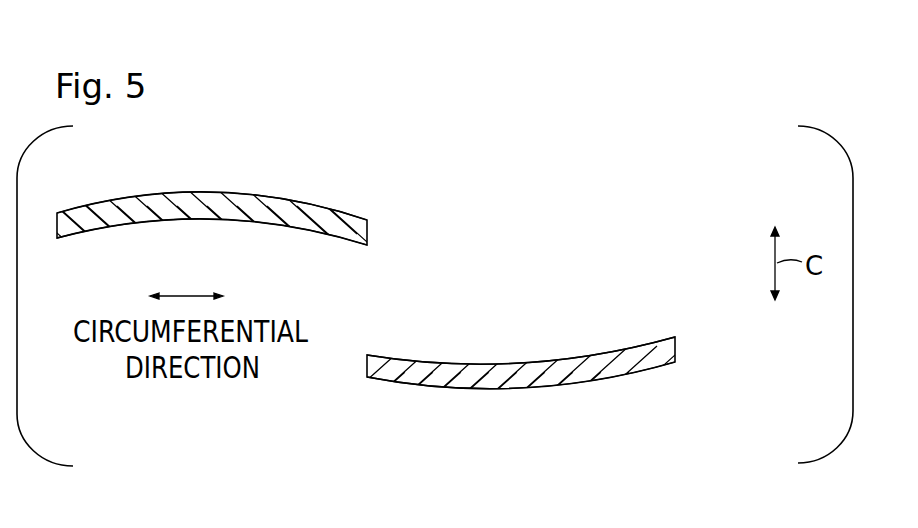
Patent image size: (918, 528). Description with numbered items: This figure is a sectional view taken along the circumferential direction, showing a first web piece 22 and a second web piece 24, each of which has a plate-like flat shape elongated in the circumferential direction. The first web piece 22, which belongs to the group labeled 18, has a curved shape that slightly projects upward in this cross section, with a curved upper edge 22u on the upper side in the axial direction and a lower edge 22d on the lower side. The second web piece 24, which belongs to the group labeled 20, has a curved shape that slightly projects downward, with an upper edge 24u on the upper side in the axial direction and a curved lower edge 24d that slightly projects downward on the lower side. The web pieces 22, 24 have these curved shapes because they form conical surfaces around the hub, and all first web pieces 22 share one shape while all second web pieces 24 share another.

The first member 18 is at (234, 213).
The first web piece 22 is at (357, 210).
The upper edge 22u is at (213, 193).
The lower edge 22d is at (298, 232).
The second member 20 is at (544, 374).
The second web piece 24 is at (617, 380).
The upper edge 24u is at (610, 350).
The lower edge 24d is at (560, 388).